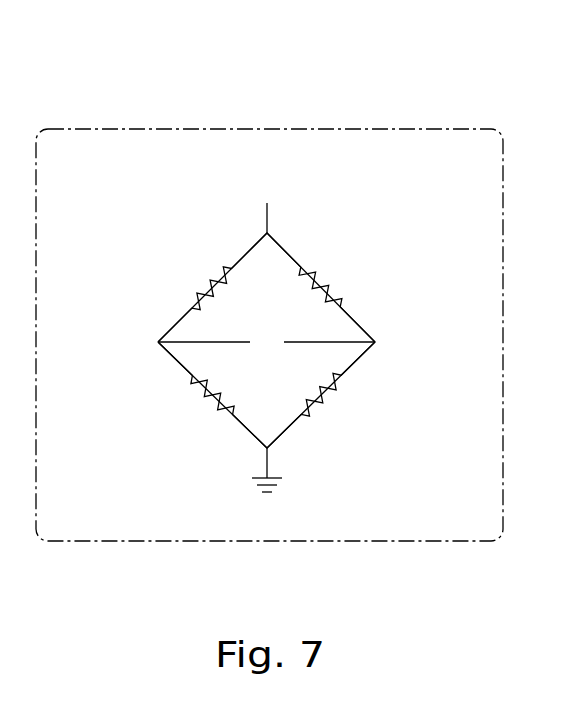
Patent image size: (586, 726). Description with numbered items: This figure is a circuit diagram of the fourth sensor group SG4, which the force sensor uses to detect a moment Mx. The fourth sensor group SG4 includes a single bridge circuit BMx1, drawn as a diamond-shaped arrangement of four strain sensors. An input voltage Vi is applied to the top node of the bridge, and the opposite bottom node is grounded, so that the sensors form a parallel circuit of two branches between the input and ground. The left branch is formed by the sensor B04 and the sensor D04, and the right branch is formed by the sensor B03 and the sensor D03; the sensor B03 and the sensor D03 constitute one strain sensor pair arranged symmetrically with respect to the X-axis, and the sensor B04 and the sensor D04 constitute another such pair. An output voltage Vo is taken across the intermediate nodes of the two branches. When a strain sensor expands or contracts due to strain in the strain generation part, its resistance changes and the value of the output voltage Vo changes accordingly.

The fourth sensor group SG4 is at (147, 128).
The bridge circuit BMx1 is at (160, 213).
The input voltage Vi is at (262, 200).
The output voltage Vo is at (266, 342).
The sensor B04 is at (207, 287).
The sensor B03 is at (322, 287).
The sensor D04 is at (207, 395).
The sensor D03 is at (322, 395).